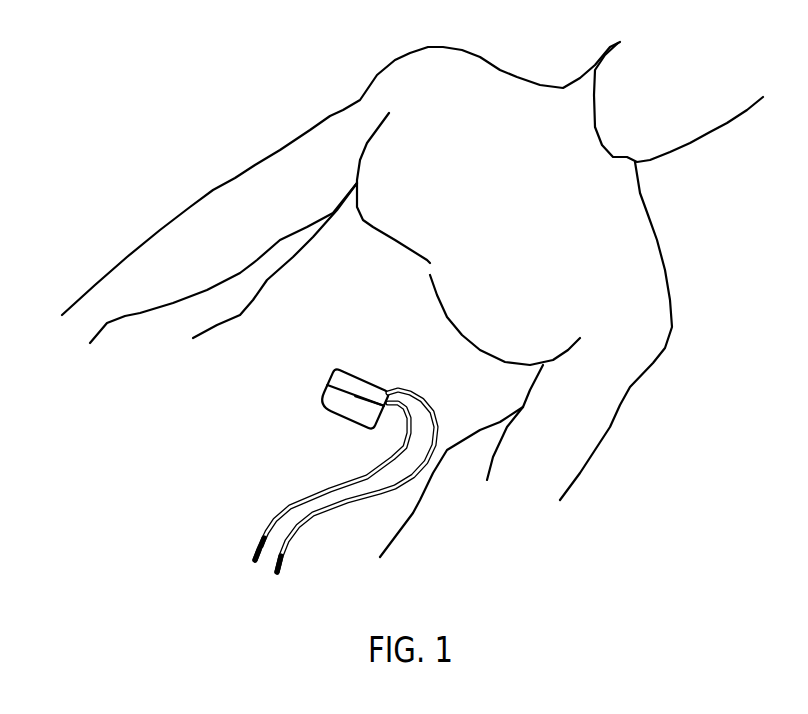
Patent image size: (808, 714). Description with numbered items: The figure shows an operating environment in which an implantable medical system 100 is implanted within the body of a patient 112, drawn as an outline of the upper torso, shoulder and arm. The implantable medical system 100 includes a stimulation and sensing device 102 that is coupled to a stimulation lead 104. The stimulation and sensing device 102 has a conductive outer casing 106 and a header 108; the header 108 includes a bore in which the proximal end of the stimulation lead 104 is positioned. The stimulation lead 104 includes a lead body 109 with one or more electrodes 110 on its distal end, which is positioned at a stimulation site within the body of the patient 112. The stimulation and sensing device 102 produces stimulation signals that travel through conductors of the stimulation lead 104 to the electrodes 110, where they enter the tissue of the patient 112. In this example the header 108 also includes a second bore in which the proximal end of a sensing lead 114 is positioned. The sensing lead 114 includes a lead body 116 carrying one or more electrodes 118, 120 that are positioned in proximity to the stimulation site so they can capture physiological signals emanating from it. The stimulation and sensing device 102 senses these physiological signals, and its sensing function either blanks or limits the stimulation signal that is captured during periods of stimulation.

The implantable medical system 100 is at (312, 345).
The stimulation and sensing device 102 is at (318, 407).
The stimulation lead 104 is at (338, 499).
The conductive outer casing 106 is at (368, 405).
The header 108 is at (343, 377).
The lead body 109 is at (362, 500).
The electrodes 110 is at (272, 570).
The patient 112 is at (655, 230).
The sensing lead 114 is at (299, 492).
The lead body 116 is at (322, 492).
The electrode 118 is at (248, 555).
The electrode 120 is at (258, 545).